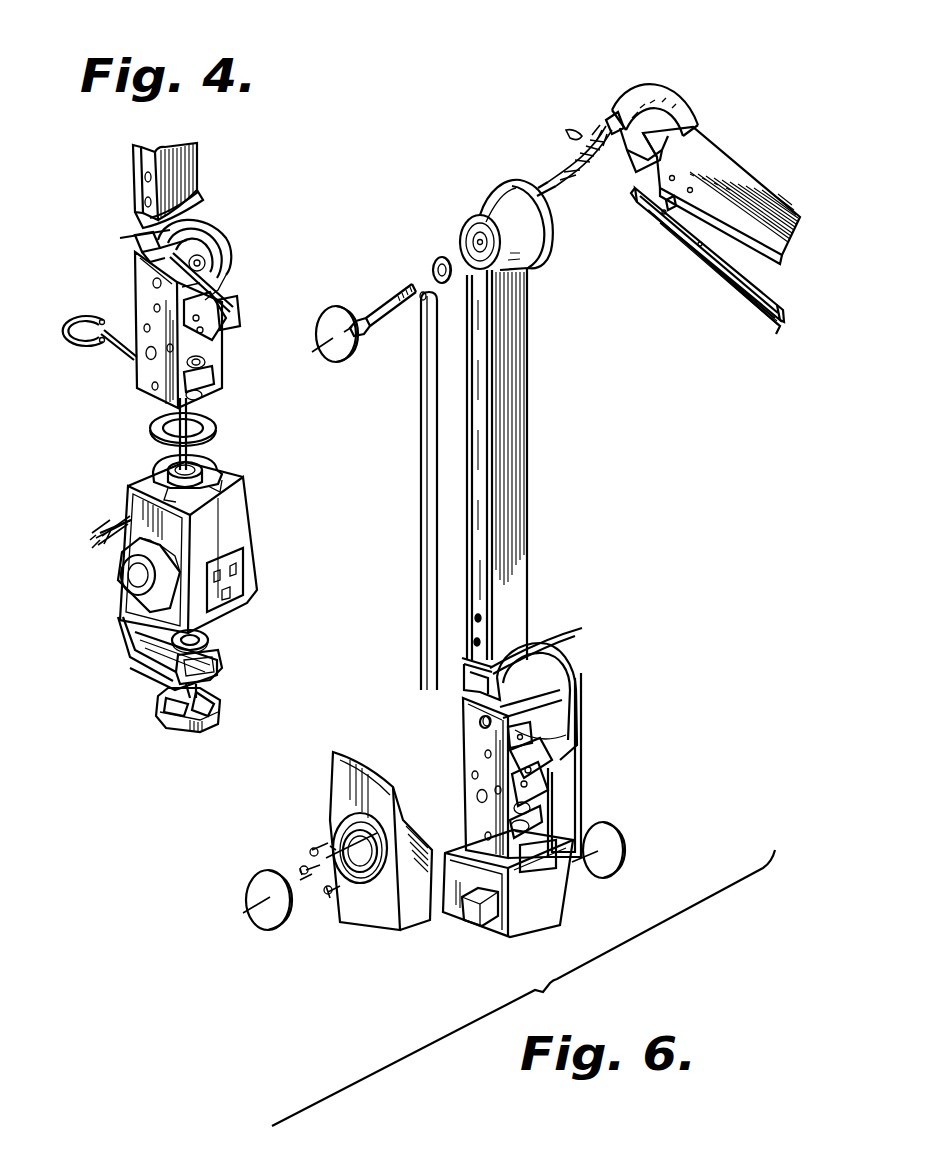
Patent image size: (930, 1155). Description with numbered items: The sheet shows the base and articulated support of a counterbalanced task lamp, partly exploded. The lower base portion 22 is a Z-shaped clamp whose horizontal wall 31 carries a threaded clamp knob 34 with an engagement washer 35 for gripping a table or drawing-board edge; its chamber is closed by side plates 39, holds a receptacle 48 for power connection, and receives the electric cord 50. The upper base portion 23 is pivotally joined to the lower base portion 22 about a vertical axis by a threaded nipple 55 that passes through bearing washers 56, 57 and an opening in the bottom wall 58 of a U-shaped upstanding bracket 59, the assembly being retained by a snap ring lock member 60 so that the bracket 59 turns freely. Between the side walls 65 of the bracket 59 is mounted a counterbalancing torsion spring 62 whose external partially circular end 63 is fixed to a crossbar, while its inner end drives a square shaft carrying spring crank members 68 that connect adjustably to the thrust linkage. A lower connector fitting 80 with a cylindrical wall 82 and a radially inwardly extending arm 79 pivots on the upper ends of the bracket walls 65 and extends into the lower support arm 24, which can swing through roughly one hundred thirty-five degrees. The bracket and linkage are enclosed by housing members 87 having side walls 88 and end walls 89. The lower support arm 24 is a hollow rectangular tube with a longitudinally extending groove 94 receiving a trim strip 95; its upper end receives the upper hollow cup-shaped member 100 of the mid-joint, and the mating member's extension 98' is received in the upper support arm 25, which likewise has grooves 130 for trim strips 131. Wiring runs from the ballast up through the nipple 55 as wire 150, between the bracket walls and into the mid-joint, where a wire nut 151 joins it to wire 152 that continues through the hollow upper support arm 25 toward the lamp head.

In FIG. 4, the lower base portion 22 is at (276, 549).
In FIG. 4, the upper base portion 23 is at (124, 246).
In FIG. 4, the lower support arm 24 is at (176, 157).
In FIG. 6, the lower support arm 24 is at (524, 481).
In FIG. 6, the upper support arm 25 is at (733, 172).
In FIG. 4, the horizontal wall 31 is at (205, 683).
In FIG. 4, the clamp knob 34 is at (180, 728).
In FIG. 4, the engagement washer 35 is at (151, 675).
In FIG. 4, the side plates 39 is at (135, 526).
In FIG. 4, the receptacle 48 is at (236, 600).
In FIG. 4, the electric cord 50 is at (110, 512).
In FIG. 4, the threaded nipple 55 is at (214, 472).
In FIG. 4, the bearing washer 56 is at (152, 468).
In FIG. 4, the bearing washer 57 is at (150, 428).
In FIG. 4, the bottom wall 58 is at (140, 392).
In FIG. 4, the U-shaped upstanding bracket 59 is at (148, 294).
In FIG. 6, the U-shaped upstanding bracket 59 is at (478, 812).
In FIG. 4, the snap ring lock member 60 is at (77, 342).
In FIG. 4, the counterbalancing torsion spring 62 is at (204, 330).
In FIG. 4, the external partially circular end 63 is at (198, 370).
In FIG. 6, the side walls 65 is at (476, 720).
In FIG. 6, the spring crank members 68 is at (523, 787).
In FIG. 4, the radially inwardly extending arm 79 is at (211, 233).
In FIG. 6, the radially inwardly extending arm 79 is at (482, 692).
In FIG. 4, the lower connector fitting 80 is at (199, 210).
In FIG. 6, the lower connector fitting 80 is at (533, 645).
In FIG. 6, the cylindrical wall 82 is at (559, 682).
In FIG. 6, the upper base portion housing members 87 is at (583, 713).
In FIG. 6, the side walls 88 is at (370, 897).
In FIG. 6, the end walls 89 is at (412, 912).
In FIG. 6, the longitudinally extending groove 94 is at (478, 390).
In FIG. 6, the trim strip 95 is at (426, 394).
In FIG. 6, the extension 98' is at (670, 97).
In FIG. 6, the upper hollow cup-shaped member 100 is at (482, 212).
In FIG. 6, the longitudinally extending grooves 130 is at (767, 253).
In FIG. 6, the trim strips 131 is at (707, 264).
In FIG. 6, the wire 150 is at (537, 196).
In FIG. 6, the wire nut 151 is at (573, 130).
In FIG. 6, the wire 152 is at (614, 112).